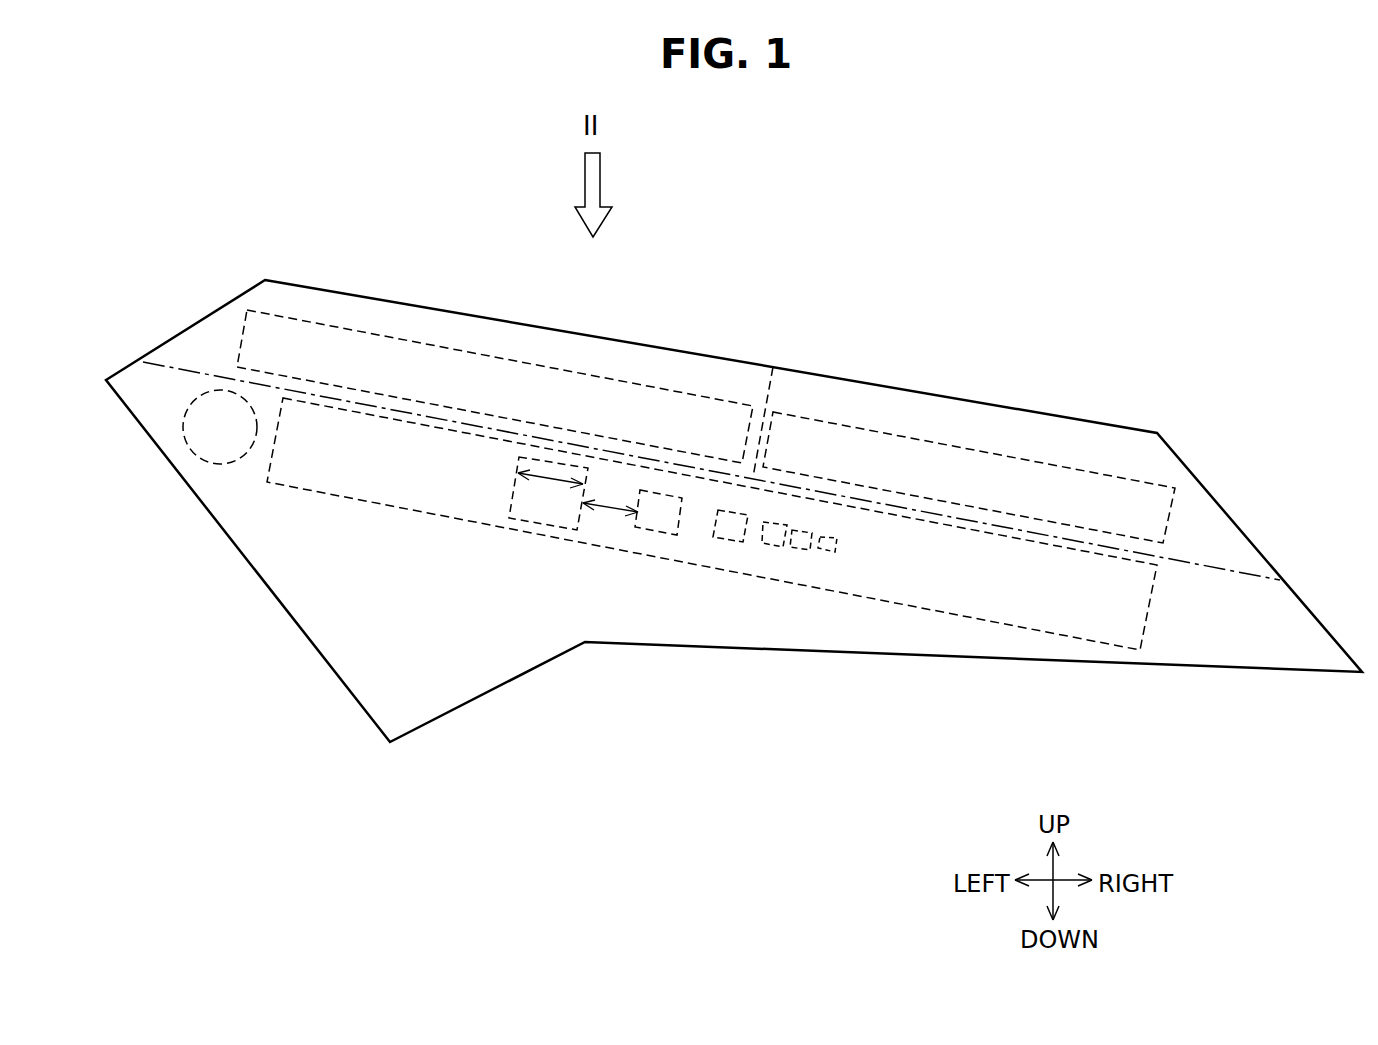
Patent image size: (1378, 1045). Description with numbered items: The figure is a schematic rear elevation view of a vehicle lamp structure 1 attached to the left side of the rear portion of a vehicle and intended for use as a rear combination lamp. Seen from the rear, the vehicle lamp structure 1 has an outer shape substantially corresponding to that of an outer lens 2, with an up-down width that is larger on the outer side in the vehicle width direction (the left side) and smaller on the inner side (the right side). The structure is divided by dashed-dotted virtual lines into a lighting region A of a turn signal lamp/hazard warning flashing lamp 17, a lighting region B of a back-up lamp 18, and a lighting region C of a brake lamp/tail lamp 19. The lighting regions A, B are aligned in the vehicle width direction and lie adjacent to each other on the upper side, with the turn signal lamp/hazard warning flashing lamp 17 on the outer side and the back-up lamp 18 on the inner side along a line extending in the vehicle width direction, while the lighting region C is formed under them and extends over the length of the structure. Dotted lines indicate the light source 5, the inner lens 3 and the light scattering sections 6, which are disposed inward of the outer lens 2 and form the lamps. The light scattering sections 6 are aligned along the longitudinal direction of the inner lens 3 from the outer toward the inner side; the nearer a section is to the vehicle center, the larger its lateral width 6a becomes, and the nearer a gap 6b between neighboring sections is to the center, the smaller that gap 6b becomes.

The vehicle lamp structure 1 is at (1067, 240).
The outer lens 2 is at (643, 368).
The inner lens 3 is at (378, 503).
The light source 5 is at (220, 467).
The light scattering sections 6 is at (643, 597).
The lateral width 6a is at (543, 483).
The gap 6b is at (605, 507).
The turn signal lamp/hazard warning flashing lamp 17 is at (338, 350).
The back-up lamp 18 is at (985, 437).
The brake lamp/tail lamp 19 is at (643, 629).
The lighting region A is at (442, 332).
The lighting region B is at (1105, 455).
The lighting region C is at (1220, 640).